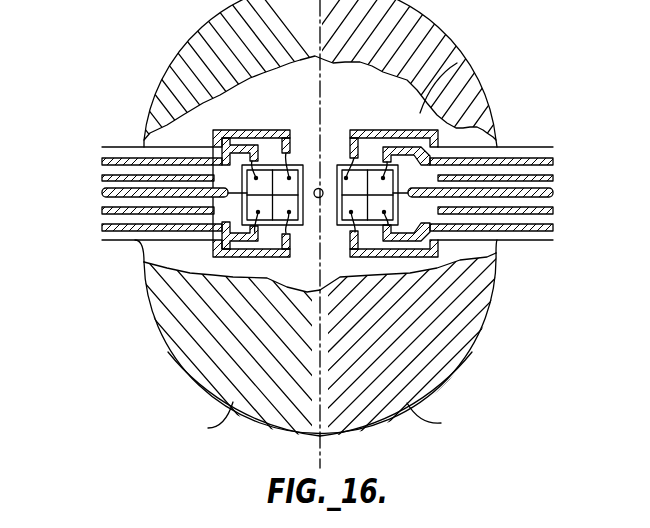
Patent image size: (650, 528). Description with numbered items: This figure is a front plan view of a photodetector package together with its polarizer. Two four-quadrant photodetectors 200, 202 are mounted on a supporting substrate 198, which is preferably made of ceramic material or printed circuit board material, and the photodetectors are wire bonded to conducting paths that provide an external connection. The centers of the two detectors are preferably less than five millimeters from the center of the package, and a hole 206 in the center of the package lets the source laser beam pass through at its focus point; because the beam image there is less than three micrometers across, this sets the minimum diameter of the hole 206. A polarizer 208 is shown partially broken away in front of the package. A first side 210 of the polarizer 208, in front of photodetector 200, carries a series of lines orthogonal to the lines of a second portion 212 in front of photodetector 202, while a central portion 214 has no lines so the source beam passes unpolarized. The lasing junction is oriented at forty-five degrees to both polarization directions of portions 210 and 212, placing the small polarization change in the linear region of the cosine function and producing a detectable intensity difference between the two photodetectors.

The supporting substrate 198 is at (463, 62).
The four-quadrant photodetector 200 is at (301, 150).
The four-quadrant photodetector 202 is at (339, 152).
The hole 206 is at (317, 198).
The first side of polarizer 210 is at (165, 322).
The second portion of polarizer 212 is at (472, 320).
The central portion of polarizer 214 is at (323, 435).
The polarizer 208 is at (342, 433).